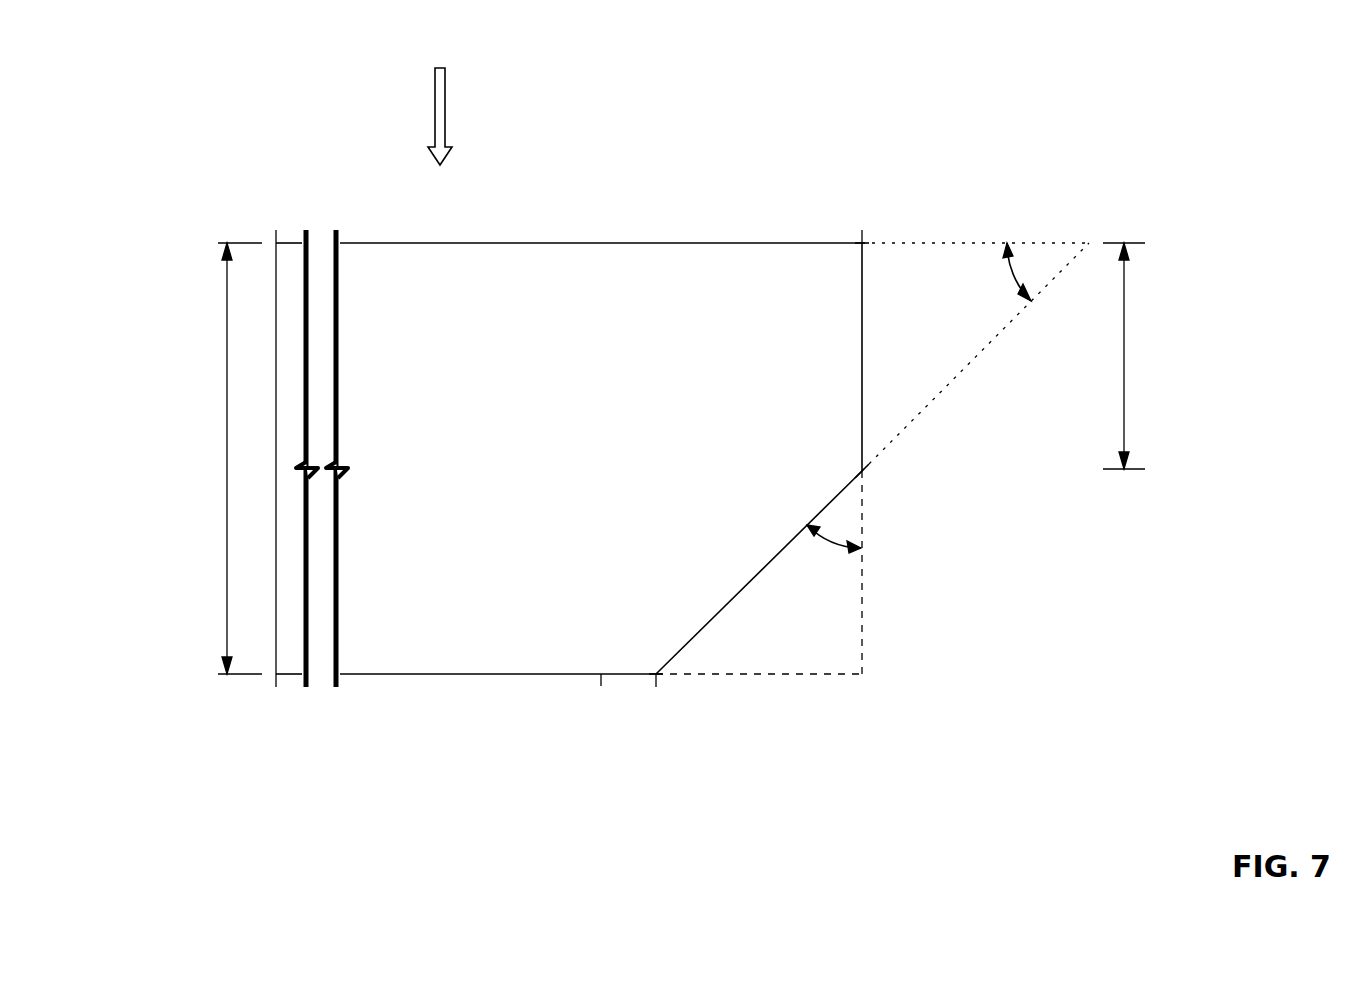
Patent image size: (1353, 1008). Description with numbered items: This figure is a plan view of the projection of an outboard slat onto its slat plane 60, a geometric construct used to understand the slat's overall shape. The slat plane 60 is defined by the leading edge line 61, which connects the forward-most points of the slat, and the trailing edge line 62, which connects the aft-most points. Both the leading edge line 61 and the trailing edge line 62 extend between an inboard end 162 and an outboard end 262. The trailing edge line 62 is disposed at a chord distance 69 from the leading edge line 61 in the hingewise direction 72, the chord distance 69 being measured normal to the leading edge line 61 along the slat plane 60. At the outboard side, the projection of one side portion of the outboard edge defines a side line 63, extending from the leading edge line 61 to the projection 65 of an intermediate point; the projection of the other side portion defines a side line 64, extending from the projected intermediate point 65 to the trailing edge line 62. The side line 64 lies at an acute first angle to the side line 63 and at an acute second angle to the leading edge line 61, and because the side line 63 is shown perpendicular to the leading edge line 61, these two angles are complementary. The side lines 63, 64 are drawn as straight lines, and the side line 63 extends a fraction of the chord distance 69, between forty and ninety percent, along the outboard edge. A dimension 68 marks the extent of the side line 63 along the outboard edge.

The slat plane 60 is at (1050, 94).
The leading edge line 61 is at (602, 243).
The trailing edge line 62 is at (601, 676).
The side line 63 is at (862, 362).
The side line 64 is at (714, 616).
The projection of the intermediate point 65 is at (852, 460).
The leading face height 68 is at (1124, 365).
The chord distance 69 is at (227, 470).
The hingewise direction 72 is at (435, 100).
The inboard end 162 is at (276, 240).
The outboard end 262 is at (862, 240).